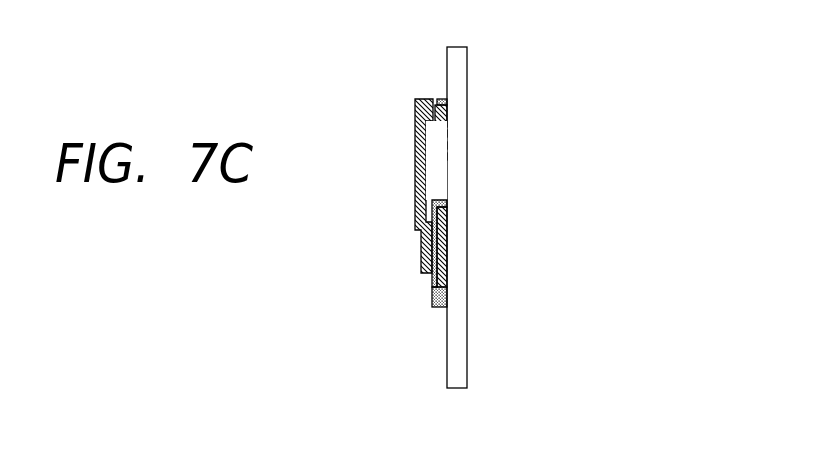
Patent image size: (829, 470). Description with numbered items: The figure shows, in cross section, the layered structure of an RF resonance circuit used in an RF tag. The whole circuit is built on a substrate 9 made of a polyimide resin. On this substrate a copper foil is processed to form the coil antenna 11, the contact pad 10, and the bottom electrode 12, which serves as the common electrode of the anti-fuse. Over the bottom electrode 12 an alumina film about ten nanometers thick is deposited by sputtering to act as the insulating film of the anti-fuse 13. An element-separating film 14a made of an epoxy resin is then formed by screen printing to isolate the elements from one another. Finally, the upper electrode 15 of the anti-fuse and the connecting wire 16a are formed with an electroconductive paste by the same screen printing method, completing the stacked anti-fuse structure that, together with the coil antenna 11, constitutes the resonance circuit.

The substrate 9 is at (460, 83).
The contact pad 10 is at (450, 114).
The coil antenna 11 is at (447, 132).
The bottom electrode 12 is at (448, 245).
The anti-fuse 13 is at (448, 200).
The element-separating film 14a is at (443, 177).
The upper electrode 15 is at (448, 265).
The connecting wire 16a is at (431, 98).